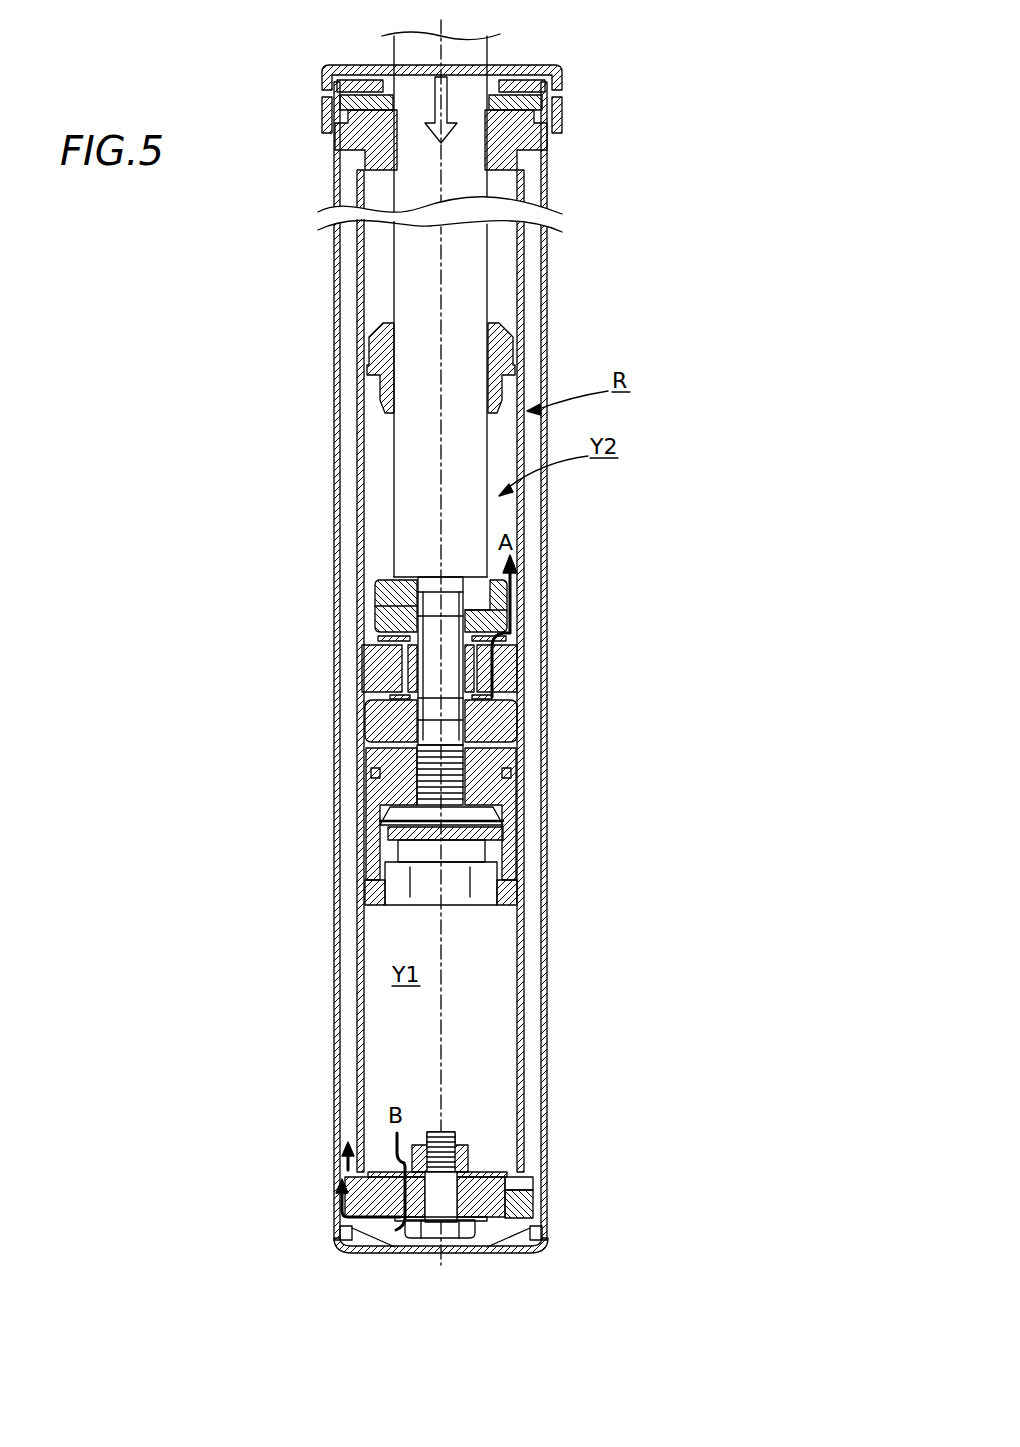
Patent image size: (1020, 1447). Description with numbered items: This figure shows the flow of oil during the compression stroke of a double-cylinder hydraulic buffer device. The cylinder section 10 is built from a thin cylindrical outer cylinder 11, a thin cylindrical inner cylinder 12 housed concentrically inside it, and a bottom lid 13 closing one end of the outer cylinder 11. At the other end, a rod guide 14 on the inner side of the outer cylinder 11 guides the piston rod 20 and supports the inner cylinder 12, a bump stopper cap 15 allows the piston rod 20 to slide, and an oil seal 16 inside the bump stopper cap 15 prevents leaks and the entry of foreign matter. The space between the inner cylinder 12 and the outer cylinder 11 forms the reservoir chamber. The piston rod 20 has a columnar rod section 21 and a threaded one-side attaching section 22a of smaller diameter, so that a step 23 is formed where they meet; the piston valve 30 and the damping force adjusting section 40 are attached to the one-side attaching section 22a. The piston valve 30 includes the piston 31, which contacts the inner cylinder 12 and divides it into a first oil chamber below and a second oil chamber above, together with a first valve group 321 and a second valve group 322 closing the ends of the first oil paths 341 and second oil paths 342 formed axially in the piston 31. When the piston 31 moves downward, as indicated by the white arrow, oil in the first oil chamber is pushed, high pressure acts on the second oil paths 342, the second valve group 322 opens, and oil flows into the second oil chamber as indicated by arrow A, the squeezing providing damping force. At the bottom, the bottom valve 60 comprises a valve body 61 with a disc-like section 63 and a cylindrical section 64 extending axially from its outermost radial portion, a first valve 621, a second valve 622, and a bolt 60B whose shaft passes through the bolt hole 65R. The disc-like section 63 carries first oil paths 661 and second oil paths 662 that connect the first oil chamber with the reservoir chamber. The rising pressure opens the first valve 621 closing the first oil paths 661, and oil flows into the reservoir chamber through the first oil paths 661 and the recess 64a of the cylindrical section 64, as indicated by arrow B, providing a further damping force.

The cylinder section 10 is at (305, 85).
The outer cylinder 11 is at (546, 335).
The inner cylinder 12 is at (530, 248).
The bottom lid 13 is at (507, 1254).
The rod guide 14 is at (533, 133).
The bump stopper cap 15 is at (532, 63).
The oil seal 16 is at (537, 98).
The piston rod 20 is at (390, 455).
The rod section 21 is at (395, 265).
The one-side attaching section 22a is at (440, 790).
The step 23 is at (400, 583).
The piston valve 30 is at (514, 570).
The piston 31 is at (370, 648).
The first valve group 321 is at (393, 695).
The second valve group 322 is at (503, 637).
The first oil path 341 is at (403, 680).
The second oil path 342 is at (497, 682).
The damping force adjusting section 40 is at (550, 850).
The bottom valve 60 is at (470, 1112).
The bolt 60B is at (465, 1236).
The valve body 61 is at (370, 1183).
The first valve 621 is at (405, 1220).
The second valve 622 is at (383, 1168).
The disc-like section 63 is at (523, 1200).
The cylindrical section 64 is at (353, 1230).
The recess 64a is at (530, 1223).
The bolt hole 65R is at (443, 1140).
The first oil path 661 is at (393, 1203).
The second oil path 662 is at (507, 1182).